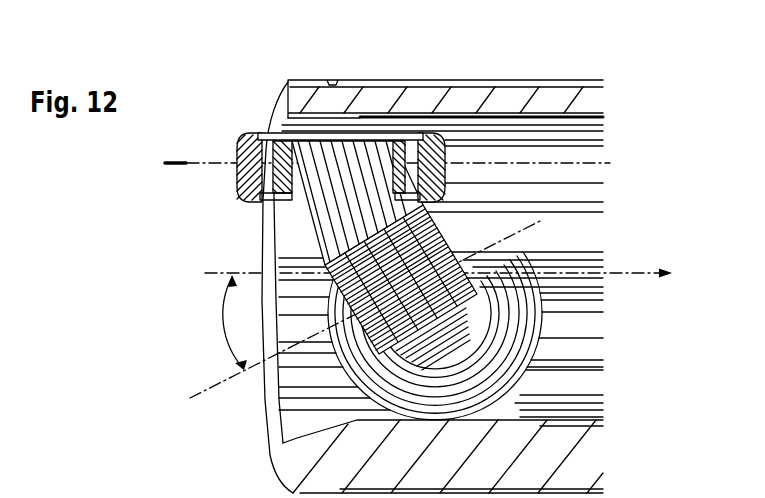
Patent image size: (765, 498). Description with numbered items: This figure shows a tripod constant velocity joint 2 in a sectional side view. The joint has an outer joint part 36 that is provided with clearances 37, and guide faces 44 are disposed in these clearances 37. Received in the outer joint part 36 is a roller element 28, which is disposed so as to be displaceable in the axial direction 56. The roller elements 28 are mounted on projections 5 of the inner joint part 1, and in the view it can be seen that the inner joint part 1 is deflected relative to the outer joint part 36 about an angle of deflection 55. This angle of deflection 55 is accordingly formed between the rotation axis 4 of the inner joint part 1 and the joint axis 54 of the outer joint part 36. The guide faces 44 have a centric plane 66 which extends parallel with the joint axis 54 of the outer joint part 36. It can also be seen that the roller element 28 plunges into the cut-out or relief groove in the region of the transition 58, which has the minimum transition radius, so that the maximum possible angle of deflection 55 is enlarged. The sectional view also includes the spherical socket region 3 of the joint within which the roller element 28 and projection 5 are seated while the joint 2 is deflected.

The inner joint part 1 is at (333, 209).
The tripod constant velocity joint 2 is at (620, 77).
The spherical socket 3 is at (463, 343).
The rotation axis 4 is at (213, 385).
The projection 5 is at (325, 197).
The roller element 28 is at (237, 174).
The outer joint part 36 is at (481, 93).
The clearance 37 is at (533, 190).
The guide face 44 is at (590, 146).
The joint axis 54 is at (630, 272).
The angle of deflection 55 is at (223, 325).
The axial direction 56 is at (657, 280).
The transition 58 is at (340, 195).
The centric plane 66 is at (613, 162).